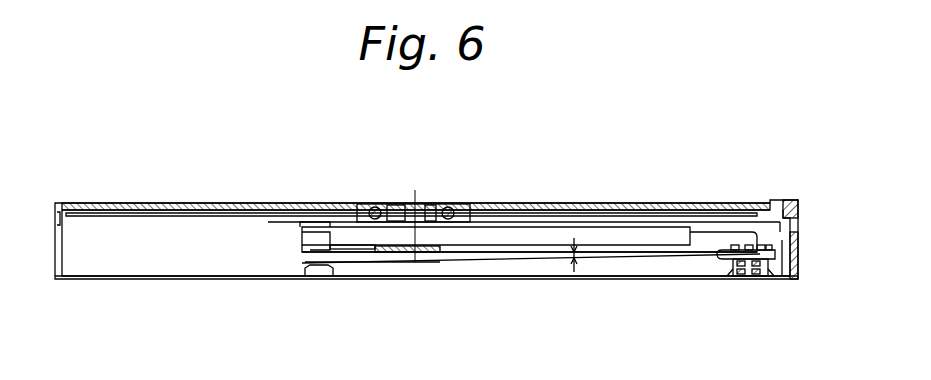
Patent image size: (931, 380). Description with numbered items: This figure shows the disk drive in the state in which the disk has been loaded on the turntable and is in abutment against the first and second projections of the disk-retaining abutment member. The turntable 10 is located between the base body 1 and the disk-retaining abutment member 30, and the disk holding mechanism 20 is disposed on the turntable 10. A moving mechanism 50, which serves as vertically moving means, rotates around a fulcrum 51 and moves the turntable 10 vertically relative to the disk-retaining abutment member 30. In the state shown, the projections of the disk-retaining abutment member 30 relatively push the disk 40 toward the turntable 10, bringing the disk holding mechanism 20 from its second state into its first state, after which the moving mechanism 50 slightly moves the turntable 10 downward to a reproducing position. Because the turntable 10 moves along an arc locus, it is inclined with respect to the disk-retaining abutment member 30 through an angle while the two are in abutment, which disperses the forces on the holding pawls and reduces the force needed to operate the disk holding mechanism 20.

The base body 1 is at (520, 278).
The turntable 10 is at (356, 236).
The disk holding mechanism 20 is at (447, 206).
The disk-retaining abutment member 30 is at (285, 205).
The disk 40 is at (207, 213).
The moving mechanism 50 is at (628, 242).
The fulcrum 51 is at (748, 262).